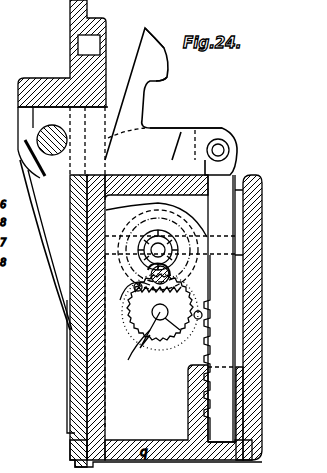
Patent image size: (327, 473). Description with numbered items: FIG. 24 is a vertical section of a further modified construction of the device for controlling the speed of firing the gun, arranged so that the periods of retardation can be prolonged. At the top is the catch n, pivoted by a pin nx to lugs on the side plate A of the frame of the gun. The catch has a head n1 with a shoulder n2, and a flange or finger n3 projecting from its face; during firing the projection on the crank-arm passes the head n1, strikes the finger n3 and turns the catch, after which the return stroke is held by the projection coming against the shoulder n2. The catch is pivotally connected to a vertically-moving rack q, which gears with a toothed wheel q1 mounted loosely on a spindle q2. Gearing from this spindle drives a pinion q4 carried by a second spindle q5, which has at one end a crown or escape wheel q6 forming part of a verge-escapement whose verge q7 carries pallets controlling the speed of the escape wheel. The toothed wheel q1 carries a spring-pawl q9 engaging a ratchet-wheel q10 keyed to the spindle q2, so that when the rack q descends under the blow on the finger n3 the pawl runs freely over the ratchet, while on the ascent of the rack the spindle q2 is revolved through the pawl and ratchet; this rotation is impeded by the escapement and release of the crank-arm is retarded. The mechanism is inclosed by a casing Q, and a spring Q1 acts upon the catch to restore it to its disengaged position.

The catch n is at (171, 101).
The head n1 is at (152, 48).
The shoulder n2 is at (158, 81).
The flange or finger n3 is at (186, 119).
The pin nx is at (33, 126).
The rack q is at (214, 308).
The toothed wheel q1 is at (160, 307).
The spindle q2 is at (139, 354).
The pinion q4 is at (108, 250).
The spindle q5 is at (165, 248).
The crown or escape wheel q6 is at (185, 222).
The verge q7 is at (240, 240).
The spring-pawl q9 is at (70, 318).
The ratchet-wheel q10 is at (140, 345).
The casing Q is at (255, 317).
The spring Q1 is at (70, 242).
The side plate A is at (72, 455).